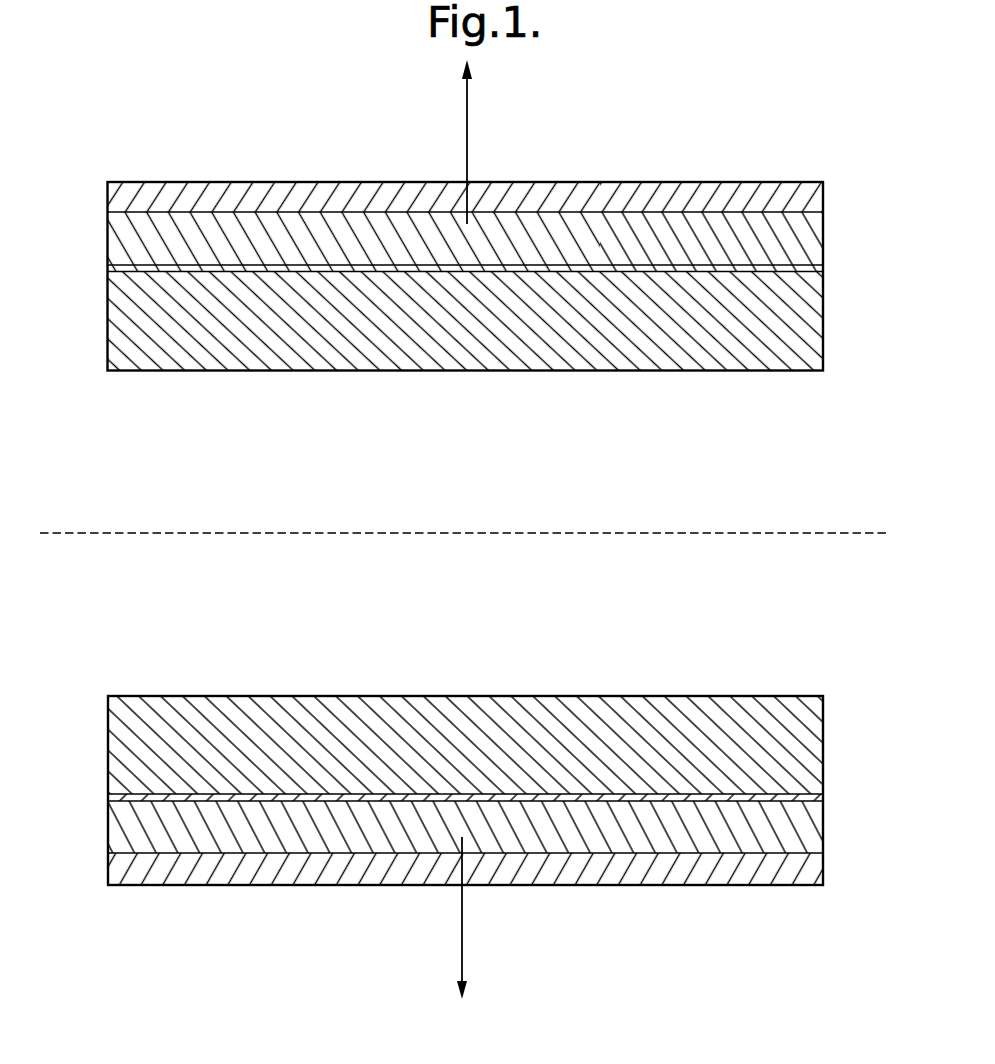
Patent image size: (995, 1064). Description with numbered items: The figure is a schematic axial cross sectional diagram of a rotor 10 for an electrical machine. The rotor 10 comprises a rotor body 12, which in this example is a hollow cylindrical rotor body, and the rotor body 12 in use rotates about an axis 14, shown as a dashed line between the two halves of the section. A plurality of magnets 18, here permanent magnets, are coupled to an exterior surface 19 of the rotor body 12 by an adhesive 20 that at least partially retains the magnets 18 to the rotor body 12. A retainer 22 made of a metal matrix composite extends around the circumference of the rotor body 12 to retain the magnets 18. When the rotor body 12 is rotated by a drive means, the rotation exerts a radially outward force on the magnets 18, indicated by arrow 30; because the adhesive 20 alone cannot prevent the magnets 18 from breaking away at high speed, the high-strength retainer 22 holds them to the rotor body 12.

The rotor 10 is at (177, 158).
The rotor body 12 is at (117, 318).
The axis 14 is at (861, 532).
The magnets 18 is at (808, 236).
The exterior surface 19 is at (685, 272).
The adhesive 20 is at (788, 272).
The retainer 22 is at (118, 194).
The arrow 30 is at (467, 118).